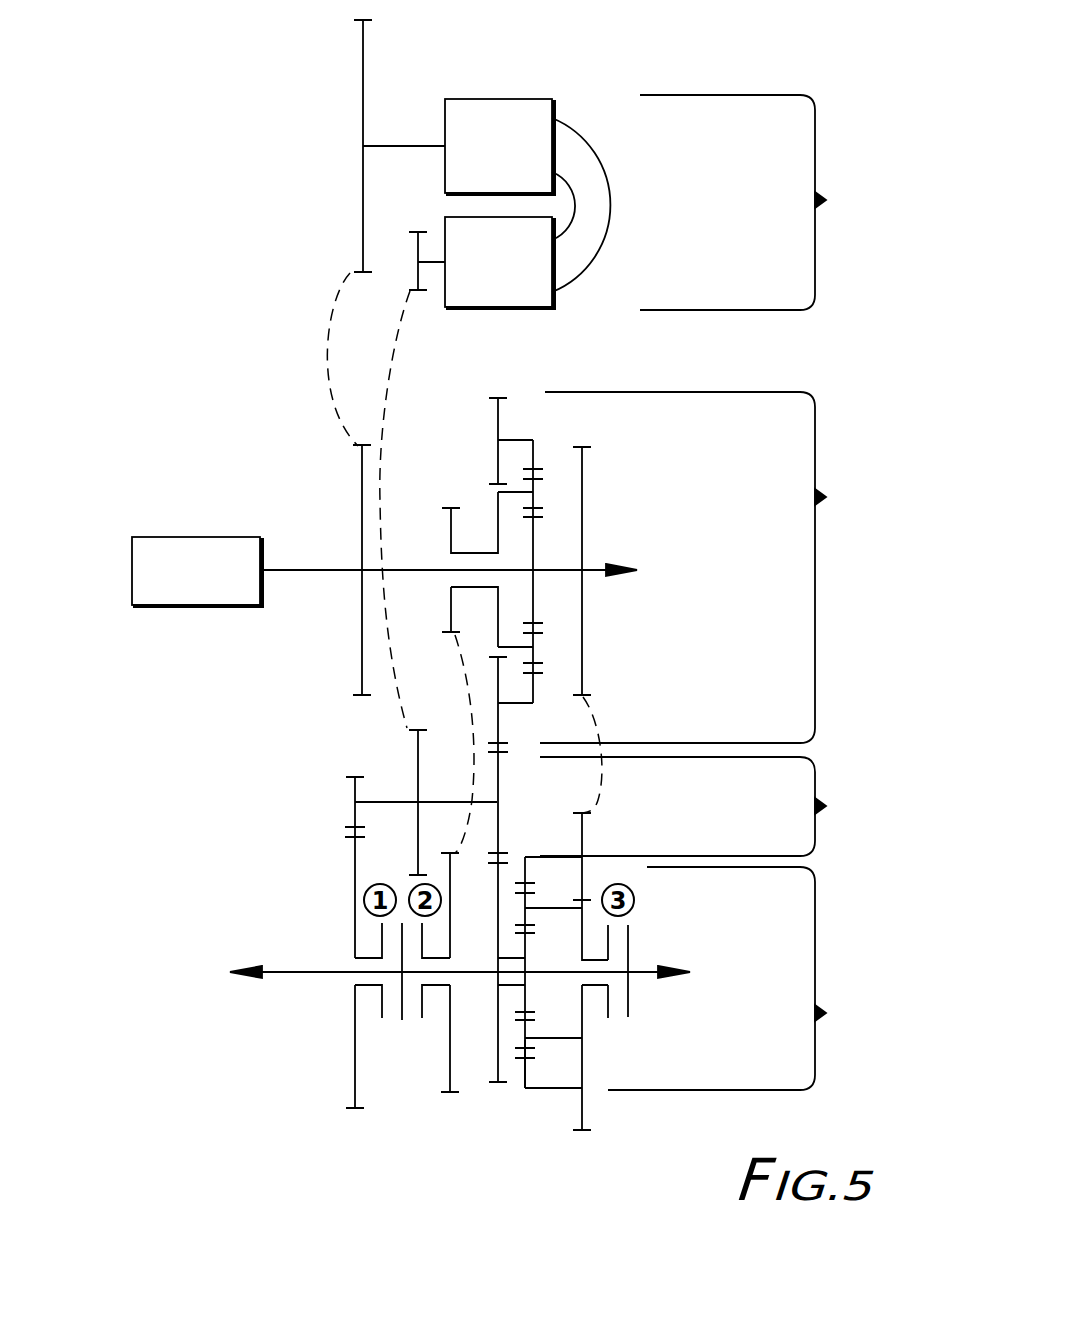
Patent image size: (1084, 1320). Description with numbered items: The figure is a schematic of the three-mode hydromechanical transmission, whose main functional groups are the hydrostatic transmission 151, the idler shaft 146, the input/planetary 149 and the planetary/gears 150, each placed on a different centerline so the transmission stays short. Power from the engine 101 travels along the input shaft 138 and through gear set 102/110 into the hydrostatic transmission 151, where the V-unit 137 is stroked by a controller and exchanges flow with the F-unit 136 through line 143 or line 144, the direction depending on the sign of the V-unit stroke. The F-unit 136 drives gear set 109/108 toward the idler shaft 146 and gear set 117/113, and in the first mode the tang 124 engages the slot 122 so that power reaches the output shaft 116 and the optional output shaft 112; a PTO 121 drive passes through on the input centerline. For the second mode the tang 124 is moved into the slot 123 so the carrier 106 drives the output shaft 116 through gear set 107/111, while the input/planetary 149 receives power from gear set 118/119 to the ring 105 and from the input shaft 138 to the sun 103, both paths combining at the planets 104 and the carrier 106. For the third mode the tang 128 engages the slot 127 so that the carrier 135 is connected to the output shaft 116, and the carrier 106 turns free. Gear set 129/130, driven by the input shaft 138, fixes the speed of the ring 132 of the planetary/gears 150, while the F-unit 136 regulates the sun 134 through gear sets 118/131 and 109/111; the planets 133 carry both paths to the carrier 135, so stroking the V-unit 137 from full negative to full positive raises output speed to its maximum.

The engine 101 is at (182, 540).
The gear 102 is at (360, 481).
The sun gear 103 is at (533, 545).
The planet gears 104 is at (533, 498).
The ring gear 105 is at (533, 447).
The carrier 106 is at (497, 508).
The gear 107 is at (451, 540).
The gear 108 is at (417, 750).
The gear 109 is at (418, 248).
The gear 110 is at (363, 205).
The gear 111 is at (450, 1053).
The optional output shaft 112 is at (640, 975).
The gear 113 is at (353, 872).
The output shaft 116 is at (297, 972).
The gear 117 is at (355, 788).
The gear 118 is at (497, 776).
The gear 119 is at (497, 717).
The PTO shaft 121 is at (593, 577).
The slot 122 is at (380, 998).
The slot 123 is at (402, 1020).
The tang 124 is at (435, 1018).
The slot 127 is at (618, 937).
The tang 128 is at (632, 958).
The gear 129 is at (583, 657).
The gear 130 is at (583, 834).
The gear 131 is at (497, 1047).
The ring gear 132 is at (525, 1088).
The planet gears 133 is at (561, 1042).
The sun gear 134 is at (525, 997).
The carrier 135 is at (580, 929).
The F-unit 136 is at (530, 298).
The V-unit 137 is at (538, 104).
The input shaft 138 is at (275, 571).
The hydraulic line 143 is at (567, 163).
The hydraulic line 144 is at (594, 272).
The idler shaft 146 is at (710, 806).
The input/planetary 149 is at (709, 567).
The planetary/gears 150 is at (744, 978).
The hydrostatic transmission 151 is at (759, 202).